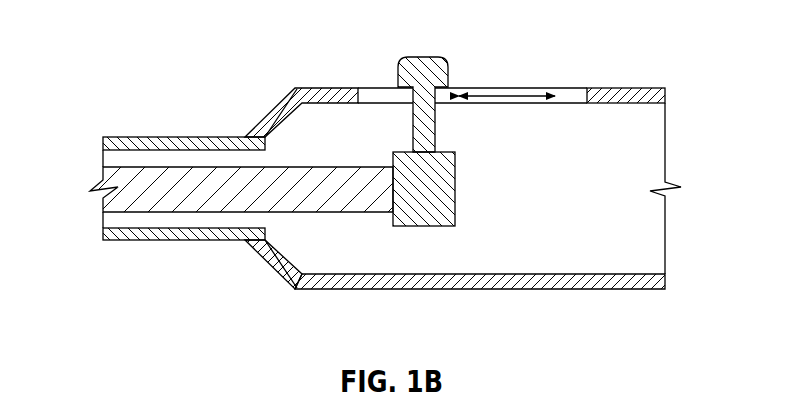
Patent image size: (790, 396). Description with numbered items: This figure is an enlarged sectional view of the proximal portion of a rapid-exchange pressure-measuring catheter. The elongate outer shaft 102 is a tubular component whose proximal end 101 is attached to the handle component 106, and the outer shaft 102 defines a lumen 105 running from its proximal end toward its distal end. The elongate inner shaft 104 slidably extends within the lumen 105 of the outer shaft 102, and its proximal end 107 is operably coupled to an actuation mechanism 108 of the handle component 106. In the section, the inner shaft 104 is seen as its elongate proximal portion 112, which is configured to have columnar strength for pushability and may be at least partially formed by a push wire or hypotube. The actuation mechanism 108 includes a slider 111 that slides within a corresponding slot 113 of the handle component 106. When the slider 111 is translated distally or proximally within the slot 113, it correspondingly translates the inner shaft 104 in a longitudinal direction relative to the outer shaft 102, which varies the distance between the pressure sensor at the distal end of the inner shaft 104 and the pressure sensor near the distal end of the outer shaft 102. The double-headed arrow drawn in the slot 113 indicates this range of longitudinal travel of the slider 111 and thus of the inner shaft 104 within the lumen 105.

The proximal end 101 is at (248, 137).
The outer shaft 102 is at (145, 137).
The inner shaft 104 is at (195, 220).
The lumen 105 is at (124, 222).
The handle component 106 is at (562, 295).
The proximal end 107 is at (388, 215).
The actuation mechanism 108 is at (531, 72).
The slider 111 is at (450, 80).
The proximal portion 112 is at (303, 200).
The slot 113 is at (577, 95).